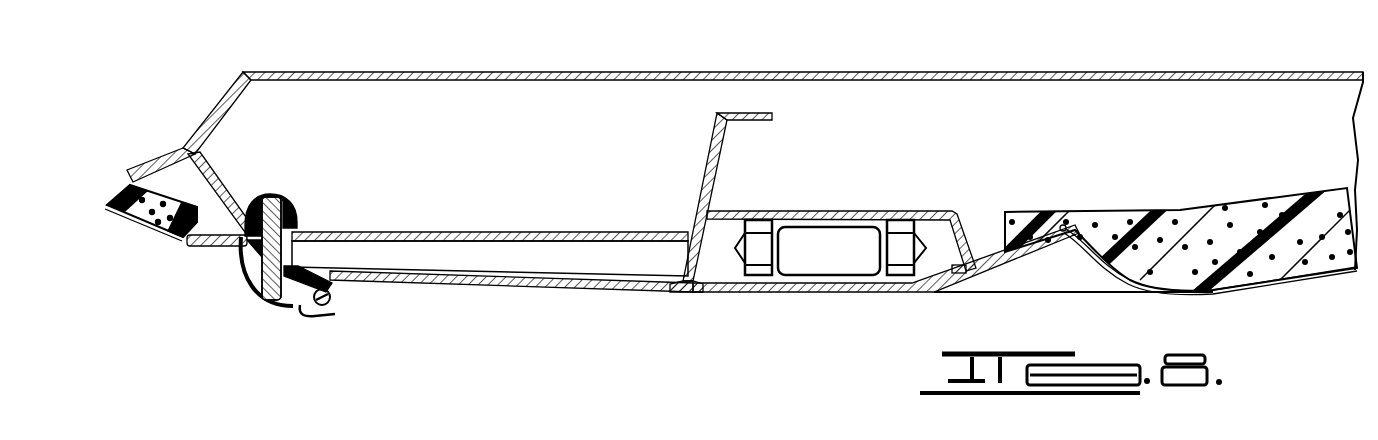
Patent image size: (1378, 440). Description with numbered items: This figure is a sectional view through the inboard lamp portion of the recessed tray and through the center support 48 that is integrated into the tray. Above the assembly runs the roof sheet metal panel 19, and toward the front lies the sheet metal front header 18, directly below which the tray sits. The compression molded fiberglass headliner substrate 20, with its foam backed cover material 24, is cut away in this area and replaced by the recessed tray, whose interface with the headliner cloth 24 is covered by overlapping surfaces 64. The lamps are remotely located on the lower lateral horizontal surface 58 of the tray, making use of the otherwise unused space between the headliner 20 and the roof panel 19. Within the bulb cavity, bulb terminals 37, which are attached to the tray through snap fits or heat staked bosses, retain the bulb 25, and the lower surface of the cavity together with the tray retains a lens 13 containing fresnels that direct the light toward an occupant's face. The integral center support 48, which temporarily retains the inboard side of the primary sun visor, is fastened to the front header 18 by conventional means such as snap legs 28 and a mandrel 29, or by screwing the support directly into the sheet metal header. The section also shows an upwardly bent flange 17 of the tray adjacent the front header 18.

The lens 13 is at (800, 293).
The slanted wall flange 17 is at (751, 211).
The sheet metal front header 18 is at (441, 232).
The roof sheet metal panel 19 is at (570, 72).
The headliner substrate 20 is at (125, 188).
The foam backed cover material 24 is at (137, 220).
The bulb 25 is at (846, 240).
The snap legs 28 is at (292, 218).
The mandrel 29 is at (273, 201).
The bulb terminals 37 is at (763, 228).
The center support 48 is at (305, 306).
The lateral horizontal surface 58 is at (535, 288).
The overlapping surfaces 64 is at (192, 250).